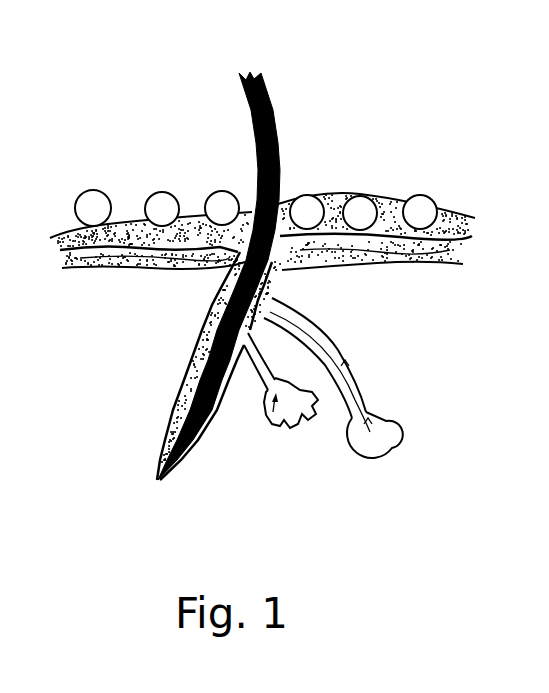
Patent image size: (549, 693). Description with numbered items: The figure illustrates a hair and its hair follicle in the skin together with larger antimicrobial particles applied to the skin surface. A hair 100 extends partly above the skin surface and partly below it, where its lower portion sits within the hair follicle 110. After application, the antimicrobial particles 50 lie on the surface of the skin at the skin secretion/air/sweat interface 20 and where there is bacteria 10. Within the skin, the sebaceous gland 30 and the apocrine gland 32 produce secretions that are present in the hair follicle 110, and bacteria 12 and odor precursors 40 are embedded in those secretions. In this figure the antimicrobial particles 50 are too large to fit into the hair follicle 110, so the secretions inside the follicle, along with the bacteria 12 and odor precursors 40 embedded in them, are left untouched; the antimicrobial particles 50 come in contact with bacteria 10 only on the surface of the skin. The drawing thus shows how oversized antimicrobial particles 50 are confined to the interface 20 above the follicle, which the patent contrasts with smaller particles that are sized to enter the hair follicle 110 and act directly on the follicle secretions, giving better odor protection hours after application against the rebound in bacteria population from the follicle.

The hair 100 is at (243, 65).
The bacteria 10 is at (262, 229).
The skin secretion/air/sweat interface 20 is at (136, 202).
The bacteria 12 is at (199, 323).
The odor precursors 40 is at (285, 278).
The antimicrobial particles 50 is at (95, 207).
The hair follicle 110 is at (192, 379).
The sebaceous gland 30 is at (270, 420).
The apocrine gland 32 is at (372, 444).